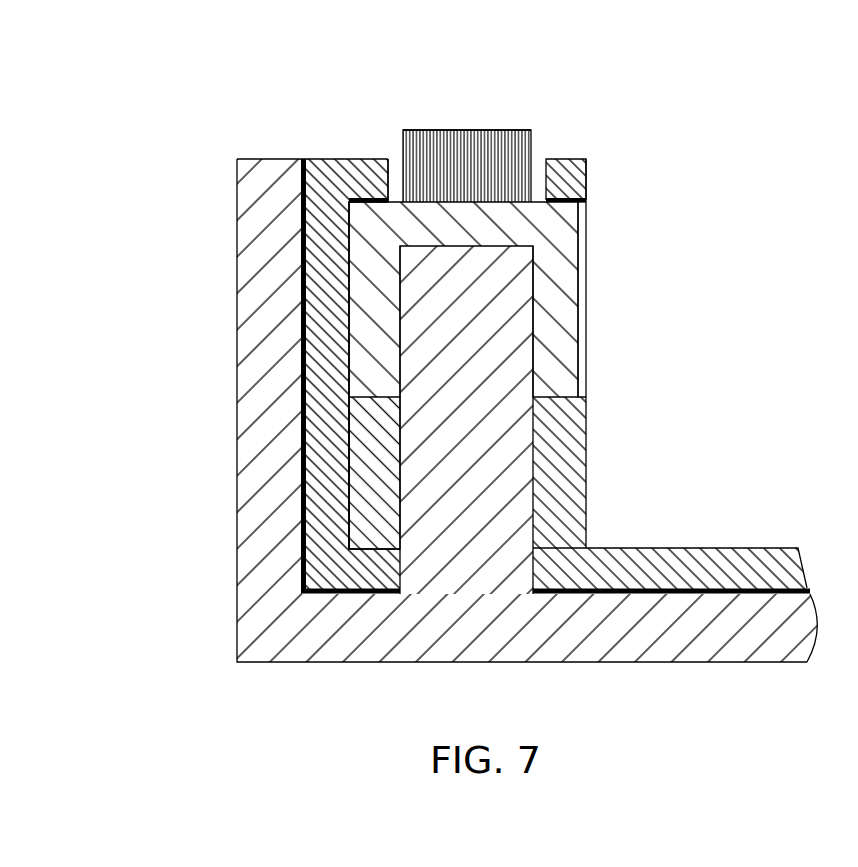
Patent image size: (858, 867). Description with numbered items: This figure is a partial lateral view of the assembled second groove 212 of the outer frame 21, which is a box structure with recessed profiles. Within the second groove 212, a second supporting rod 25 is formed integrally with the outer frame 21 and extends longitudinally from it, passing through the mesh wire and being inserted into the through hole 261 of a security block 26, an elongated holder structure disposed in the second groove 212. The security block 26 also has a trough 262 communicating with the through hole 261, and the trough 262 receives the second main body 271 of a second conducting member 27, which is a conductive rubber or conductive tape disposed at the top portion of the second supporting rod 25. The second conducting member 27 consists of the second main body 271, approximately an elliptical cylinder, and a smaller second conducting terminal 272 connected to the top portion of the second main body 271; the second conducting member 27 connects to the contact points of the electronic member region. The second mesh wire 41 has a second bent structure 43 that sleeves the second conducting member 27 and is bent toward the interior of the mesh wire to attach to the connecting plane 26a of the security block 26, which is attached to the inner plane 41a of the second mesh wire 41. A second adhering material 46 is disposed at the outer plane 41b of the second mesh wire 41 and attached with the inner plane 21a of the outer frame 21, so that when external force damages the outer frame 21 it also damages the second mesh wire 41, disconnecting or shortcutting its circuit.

The outer frame 21 is at (660, 620).
The inner plane of the outer frame 21a is at (300, 435).
The second groove 212 is at (760, 592).
The second supporting rod 25 is at (475, 385).
The security block 26 is at (555, 473).
The through hole 261 is at (530, 520).
The trough 262 is at (582, 362).
The connecting plane 26a is at (586, 207).
The second conducting member 27 is at (510, 130).
The second main body 271 is at (553, 340).
The second conducting terminal 272 is at (470, 160).
The second mesh wire 41 is at (317, 405).
The inner plane of the second mesh wire 41a is at (347, 348).
The outer plane of the second mesh wire 41b is at (300, 305).
The second bent structure 43 is at (568, 183).
The second adhering material 46 is at (362, 197).